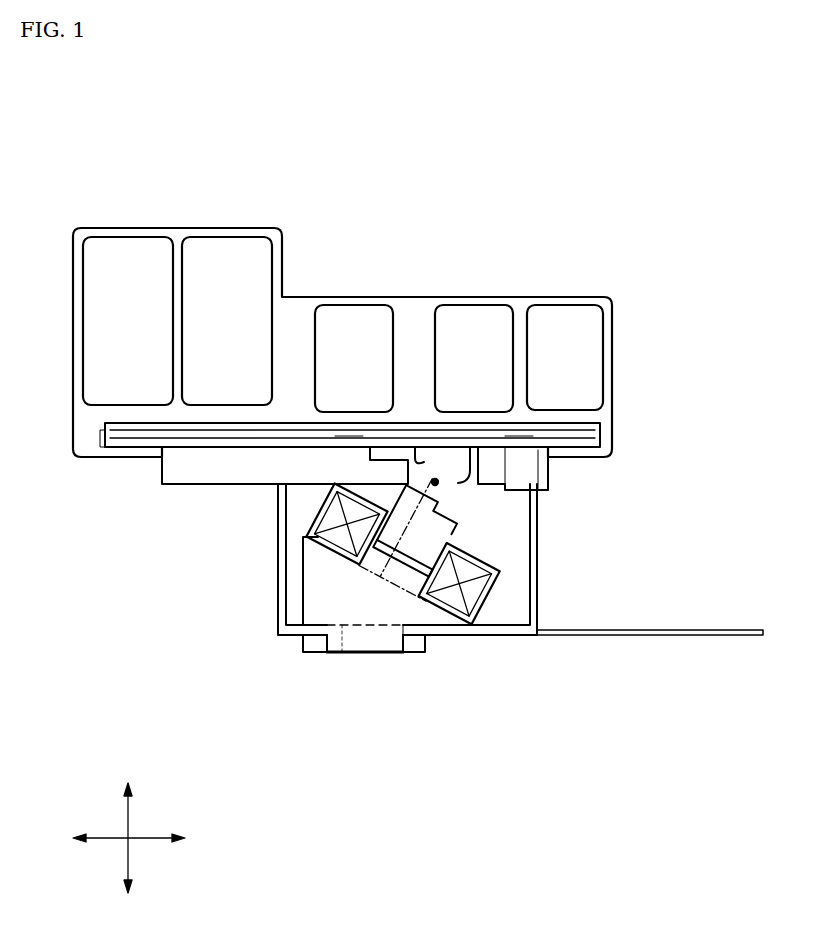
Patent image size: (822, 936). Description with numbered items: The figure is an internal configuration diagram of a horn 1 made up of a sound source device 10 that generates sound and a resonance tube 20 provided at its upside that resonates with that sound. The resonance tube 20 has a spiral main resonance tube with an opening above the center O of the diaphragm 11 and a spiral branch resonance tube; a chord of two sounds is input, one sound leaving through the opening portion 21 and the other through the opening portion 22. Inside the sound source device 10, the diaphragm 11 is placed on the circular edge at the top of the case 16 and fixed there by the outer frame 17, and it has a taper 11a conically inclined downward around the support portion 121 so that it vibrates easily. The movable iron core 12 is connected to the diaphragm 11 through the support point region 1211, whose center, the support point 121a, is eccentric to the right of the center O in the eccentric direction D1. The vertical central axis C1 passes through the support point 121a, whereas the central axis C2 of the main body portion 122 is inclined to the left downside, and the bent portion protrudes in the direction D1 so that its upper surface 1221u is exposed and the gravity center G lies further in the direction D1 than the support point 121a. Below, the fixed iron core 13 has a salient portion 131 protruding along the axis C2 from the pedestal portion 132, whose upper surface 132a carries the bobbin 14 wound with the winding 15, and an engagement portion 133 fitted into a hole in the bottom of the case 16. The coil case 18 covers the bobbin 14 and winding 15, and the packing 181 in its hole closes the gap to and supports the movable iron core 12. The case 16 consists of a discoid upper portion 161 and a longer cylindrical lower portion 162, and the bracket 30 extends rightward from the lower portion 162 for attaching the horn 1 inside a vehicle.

The horn 1 is at (369, 147).
The sound source device 10 is at (745, 540).
The diaphragm 11 is at (530, 418).
The taper 11a is at (347, 433).
The movable iron core 12 is at (518, 470).
The support portion 121 is at (455, 415).
The support point 121a is at (418, 420).
The support point region 1211 is at (440, 430).
The main body portion 122 is at (539, 517).
The upper surface of the bent portion 1221u is at (555, 452).
The fixed iron core 13 is at (387, 698).
The salient portion 131 is at (365, 612).
The pedestal portion 132 is at (337, 623).
The upper surface 132a is at (437, 618).
The engagement portion 133 is at (342, 652).
The bobbin 14 is at (540, 595).
The winding 15 is at (318, 522).
The case 16 is at (297, 563).
The upper portion 161 is at (280, 548).
The lower portion 162 is at (280, 598).
The outer frame 17 is at (108, 458).
The coil case 18 is at (483, 612).
The packing 181 is at (372, 492).
The resonance tube 20 is at (404, 346).
The opening portion 21 is at (125, 277).
The opening portion 22 is at (240, 253).
The bracket 30 is at (667, 637).
The central axis of the support portion C1 is at (442, 430).
The central axis of the main body portion C2 is at (340, 438).
The center of the diaphragm O is at (352, 427).
The gravity center G is at (440, 478).
The eccentric direction D1 is at (365, 262).